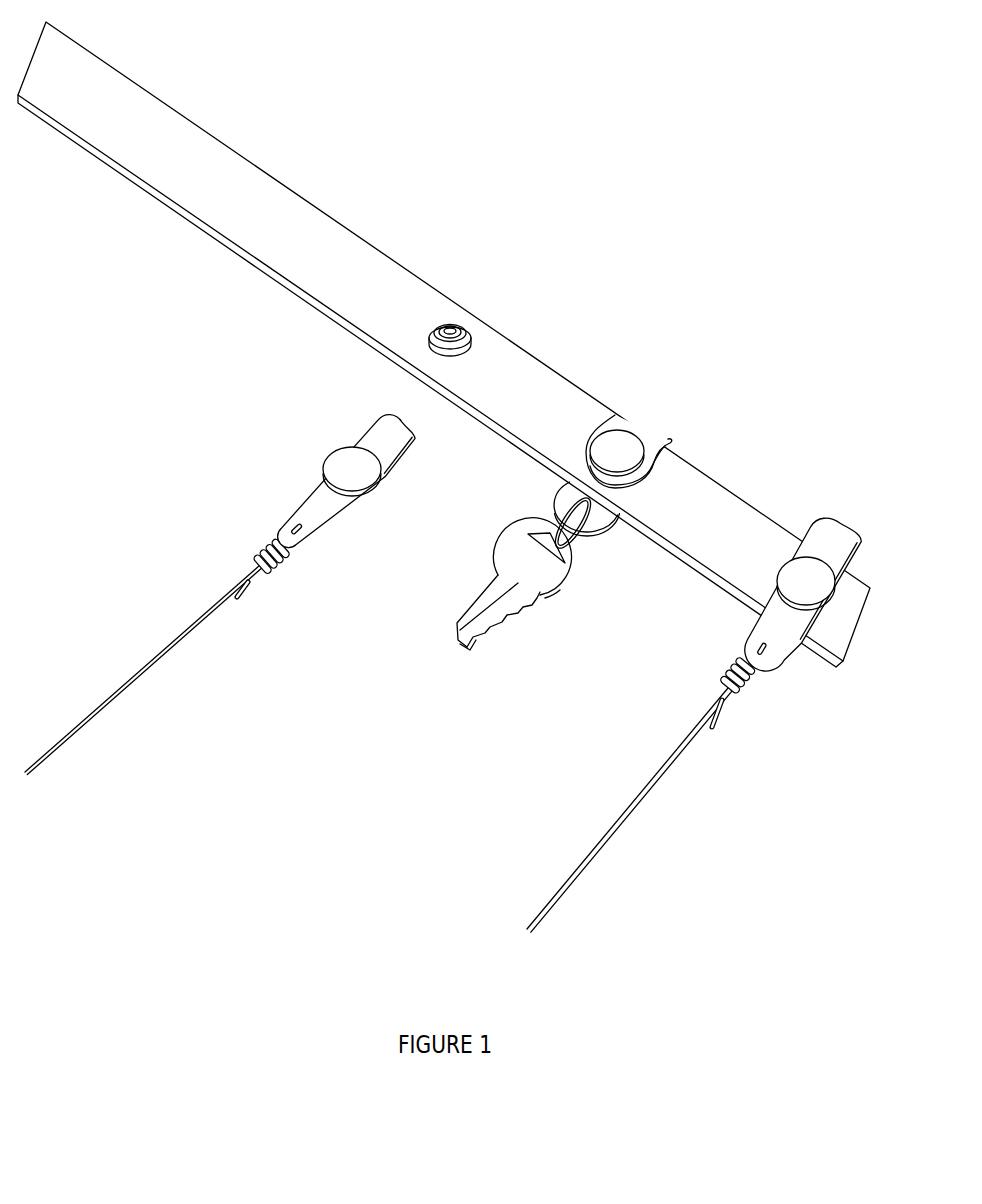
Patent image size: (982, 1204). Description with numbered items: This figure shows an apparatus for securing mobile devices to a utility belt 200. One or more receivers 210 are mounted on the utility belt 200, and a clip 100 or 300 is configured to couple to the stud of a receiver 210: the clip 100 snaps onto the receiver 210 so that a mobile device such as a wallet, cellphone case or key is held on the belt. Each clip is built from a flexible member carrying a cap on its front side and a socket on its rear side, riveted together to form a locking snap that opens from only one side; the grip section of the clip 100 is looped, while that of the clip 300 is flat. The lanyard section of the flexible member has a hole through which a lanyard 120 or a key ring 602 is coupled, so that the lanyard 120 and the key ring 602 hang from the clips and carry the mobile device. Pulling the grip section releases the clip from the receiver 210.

The clip 100 is at (328, 513).
The lanyard 120 is at (148, 662).
The utility belt 200 is at (278, 230).
The receiver 210 is at (470, 325).
The clip 300 is at (617, 413).
The key ring 602 is at (592, 538).